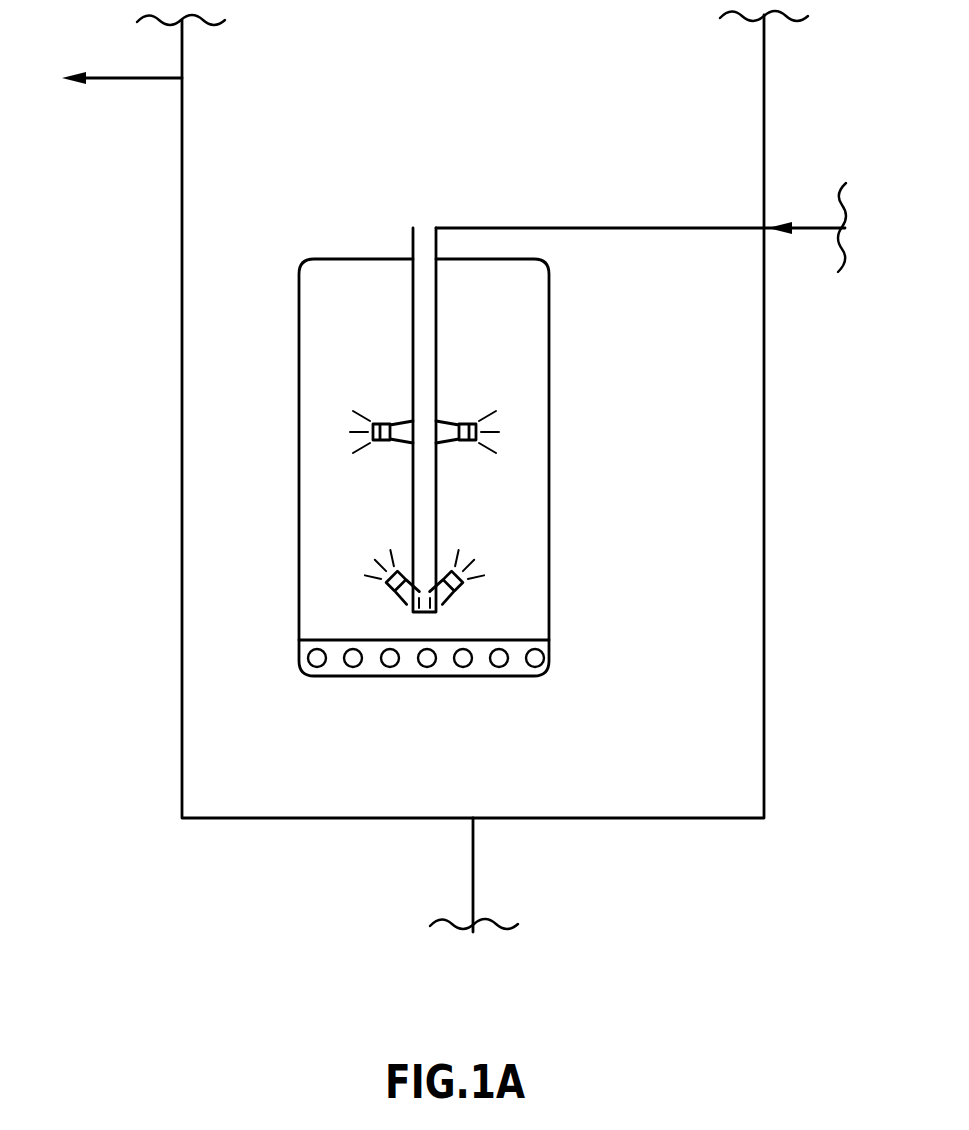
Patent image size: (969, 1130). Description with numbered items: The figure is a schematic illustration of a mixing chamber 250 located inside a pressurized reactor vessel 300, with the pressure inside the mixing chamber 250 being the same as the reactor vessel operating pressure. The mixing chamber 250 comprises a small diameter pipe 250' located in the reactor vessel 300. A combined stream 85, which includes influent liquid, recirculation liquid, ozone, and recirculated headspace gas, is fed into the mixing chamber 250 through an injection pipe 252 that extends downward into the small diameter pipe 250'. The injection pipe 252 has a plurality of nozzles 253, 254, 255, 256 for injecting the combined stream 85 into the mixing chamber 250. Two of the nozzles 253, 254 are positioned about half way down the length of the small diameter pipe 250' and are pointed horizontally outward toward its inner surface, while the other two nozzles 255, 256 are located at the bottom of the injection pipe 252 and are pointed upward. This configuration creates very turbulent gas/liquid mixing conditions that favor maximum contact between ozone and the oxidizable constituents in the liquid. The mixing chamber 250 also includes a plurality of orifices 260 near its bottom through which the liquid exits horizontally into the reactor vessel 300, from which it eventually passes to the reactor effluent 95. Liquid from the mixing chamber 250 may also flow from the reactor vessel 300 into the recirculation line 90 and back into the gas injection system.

The combined stream 85 is at (800, 228).
The recirculation line 90 is at (474, 882).
The reactor effluent 95 is at (118, 80).
The mixing chamber 250 is at (435, 448).
The small diameter pipe 250' is at (378, 467).
The injection pipe 252 is at (423, 337).
The nozzle 253 is at (392, 443).
The nozzle 254 is at (468, 442).
The nozzle 255 is at (395, 603).
The nozzle 256 is at (458, 604).
The orifices 260 is at (390, 668).
The reactor vessel 300 is at (182, 238).